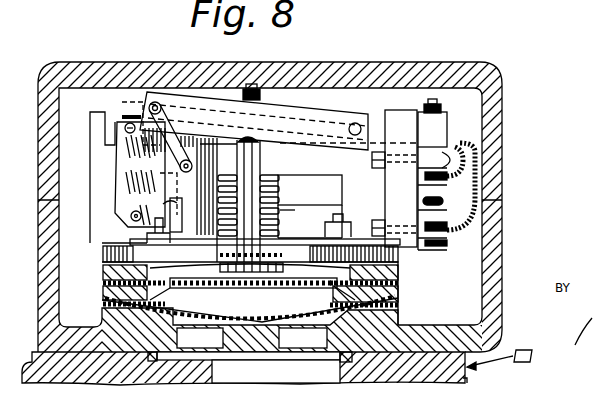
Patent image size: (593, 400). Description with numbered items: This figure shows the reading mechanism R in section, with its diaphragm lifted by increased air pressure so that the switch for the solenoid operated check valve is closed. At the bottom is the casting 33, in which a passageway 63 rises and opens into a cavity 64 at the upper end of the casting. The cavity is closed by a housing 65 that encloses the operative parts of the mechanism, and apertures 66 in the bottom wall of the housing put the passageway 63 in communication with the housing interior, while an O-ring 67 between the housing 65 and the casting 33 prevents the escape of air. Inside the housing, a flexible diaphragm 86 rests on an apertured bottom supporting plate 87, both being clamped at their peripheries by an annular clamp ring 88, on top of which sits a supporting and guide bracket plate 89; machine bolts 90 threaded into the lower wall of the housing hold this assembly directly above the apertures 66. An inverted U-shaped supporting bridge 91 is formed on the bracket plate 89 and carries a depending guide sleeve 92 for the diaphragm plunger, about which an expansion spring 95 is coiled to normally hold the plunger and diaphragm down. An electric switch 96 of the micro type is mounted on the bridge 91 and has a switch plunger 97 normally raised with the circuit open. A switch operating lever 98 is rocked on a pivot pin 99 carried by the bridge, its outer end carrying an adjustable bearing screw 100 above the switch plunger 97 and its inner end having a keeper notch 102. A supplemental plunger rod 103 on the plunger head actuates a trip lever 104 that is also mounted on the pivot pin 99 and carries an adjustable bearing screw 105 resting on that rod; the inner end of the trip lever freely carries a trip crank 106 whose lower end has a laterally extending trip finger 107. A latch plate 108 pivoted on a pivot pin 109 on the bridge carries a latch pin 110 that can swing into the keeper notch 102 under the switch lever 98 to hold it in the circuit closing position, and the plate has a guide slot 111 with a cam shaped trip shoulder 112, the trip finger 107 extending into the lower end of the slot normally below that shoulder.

The casting 33 is at (465, 376).
The passageway 63 is at (228, 363).
The cavity 64 is at (290, 364).
The housing 65 is at (503, 174).
The apertures 66 is at (210, 346).
The O-ring 67 is at (346, 354).
The flexible diaphragm 86 is at (215, 285).
The bottom supporting plate 87 is at (303, 316).
The annular clamp ring 88 is at (400, 290).
The supporting and guide bracket plate 89 is at (400, 258).
The machine bolts 90 is at (163, 243).
The supporting bridge 91 is at (381, 114).
The guide sleeve 92 is at (279, 188).
The expansion spring 95 is at (297, 214).
The electric switch 96 is at (438, 236).
The switch plunger 97 is at (452, 146).
The switch operating lever 98 is at (446, 114).
The pivot pin 99 is at (358, 124).
The adjustable bearing screw 100 is at (434, 104).
The keeper notch 102 is at (118, 112).
The supplemental plunger rod 103 is at (261, 157).
The trip lever 104 is at (278, 121).
The adjustable bearing screw 105 is at (257, 88).
The trip crank 106 is at (182, 135).
The trip finger 107 is at (180, 165).
The latch plate 108 is at (125, 172).
The pivot pin 109 is at (131, 218).
The latch pin 110 is at (117, 118).
The guide slot 111 is at (189, 218).
The trip shoulder 112 is at (160, 201).
The reading mechanism R is at (470, 123).